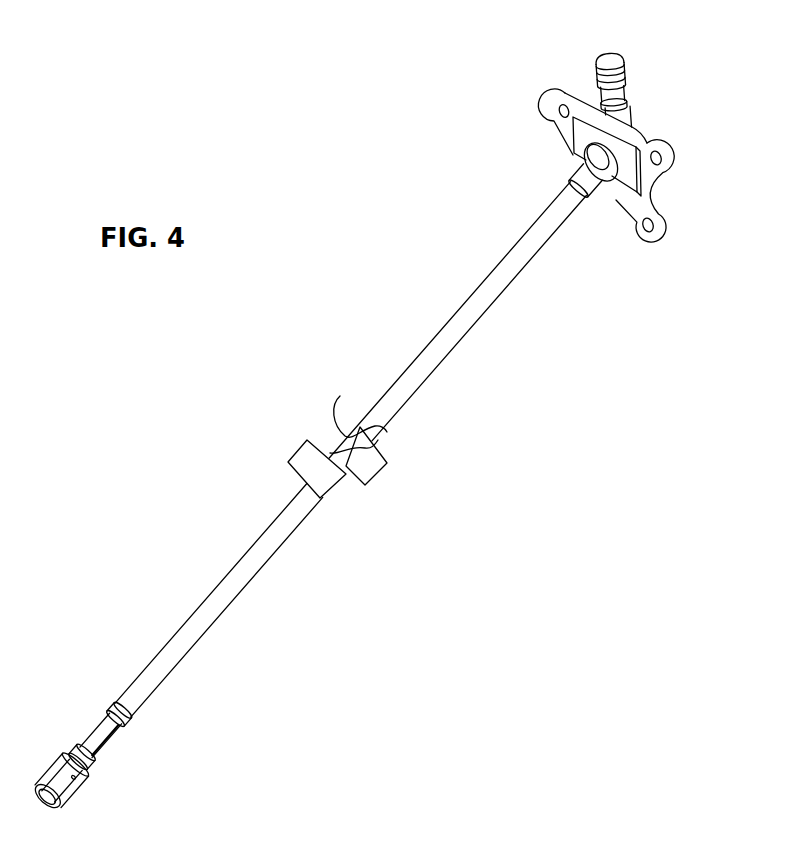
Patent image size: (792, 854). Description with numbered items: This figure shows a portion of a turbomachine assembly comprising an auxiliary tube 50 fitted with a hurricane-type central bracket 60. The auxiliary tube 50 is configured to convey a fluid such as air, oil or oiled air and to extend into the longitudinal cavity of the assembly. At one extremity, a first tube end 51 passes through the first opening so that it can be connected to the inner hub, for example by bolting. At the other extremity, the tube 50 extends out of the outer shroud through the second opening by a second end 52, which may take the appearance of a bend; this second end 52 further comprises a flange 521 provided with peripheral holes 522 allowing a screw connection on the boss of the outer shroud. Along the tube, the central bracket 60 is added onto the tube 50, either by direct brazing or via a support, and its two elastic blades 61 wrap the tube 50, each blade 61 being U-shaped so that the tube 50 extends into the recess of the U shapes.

The auxiliary tube 50 is at (482, 329).
The first tube end 51 is at (130, 772).
The second end 52 is at (667, 113).
The flange 521 is at (665, 190).
The peripheral holes 522 is at (548, 128).
The central bracket 60 is at (374, 511).
The elastic blades 61 is at (342, 396).